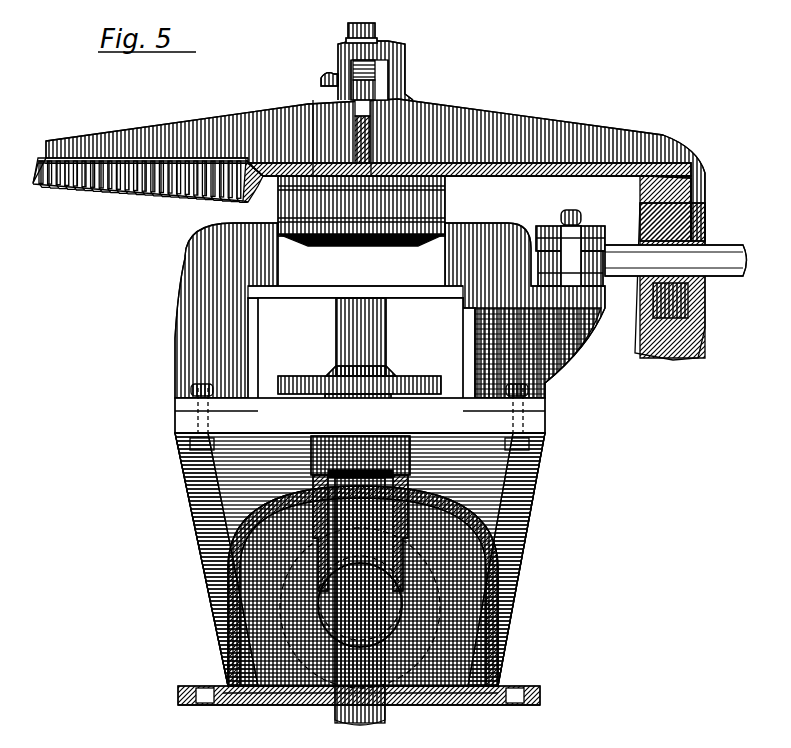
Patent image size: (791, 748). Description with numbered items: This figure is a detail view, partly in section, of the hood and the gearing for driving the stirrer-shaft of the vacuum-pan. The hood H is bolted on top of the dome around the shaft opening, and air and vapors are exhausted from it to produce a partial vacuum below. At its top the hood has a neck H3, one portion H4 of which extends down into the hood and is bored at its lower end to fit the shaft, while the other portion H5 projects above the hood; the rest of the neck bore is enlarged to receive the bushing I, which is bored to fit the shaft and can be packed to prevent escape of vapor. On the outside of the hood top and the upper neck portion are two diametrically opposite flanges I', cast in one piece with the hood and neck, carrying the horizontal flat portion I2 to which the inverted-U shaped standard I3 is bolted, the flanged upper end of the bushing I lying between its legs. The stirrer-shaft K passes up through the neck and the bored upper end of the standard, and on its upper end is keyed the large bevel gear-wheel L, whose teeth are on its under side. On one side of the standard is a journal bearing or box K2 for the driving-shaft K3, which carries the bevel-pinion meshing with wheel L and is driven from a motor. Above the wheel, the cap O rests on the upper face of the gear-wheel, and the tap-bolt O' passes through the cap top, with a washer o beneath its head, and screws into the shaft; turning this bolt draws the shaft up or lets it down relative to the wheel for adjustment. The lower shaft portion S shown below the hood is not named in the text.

The bevel gear-wheel L is at (369, 172).
The cap O is at (382, 66).
The tap-bolt O' is at (352, 47).
The washer o is at (369, 32).
The standard I3 is at (455, 330).
The stirrer-shaft K is at (328, 328).
The bushing I is at (359, 393).
The horizontal flat portion I2 is at (455, 415).
The flanges I' is at (356, 559).
The neck H3 is at (452, 470).
The hood H is at (420, 609).
The lower portion of neck H4 is at (395, 560).
The upper portion of neck H5 is at (360, 513).
The journal bearing or box K2 is at (597, 222).
The driving-shaft K3 is at (712, 276).
The main shaft S is at (360, 601).